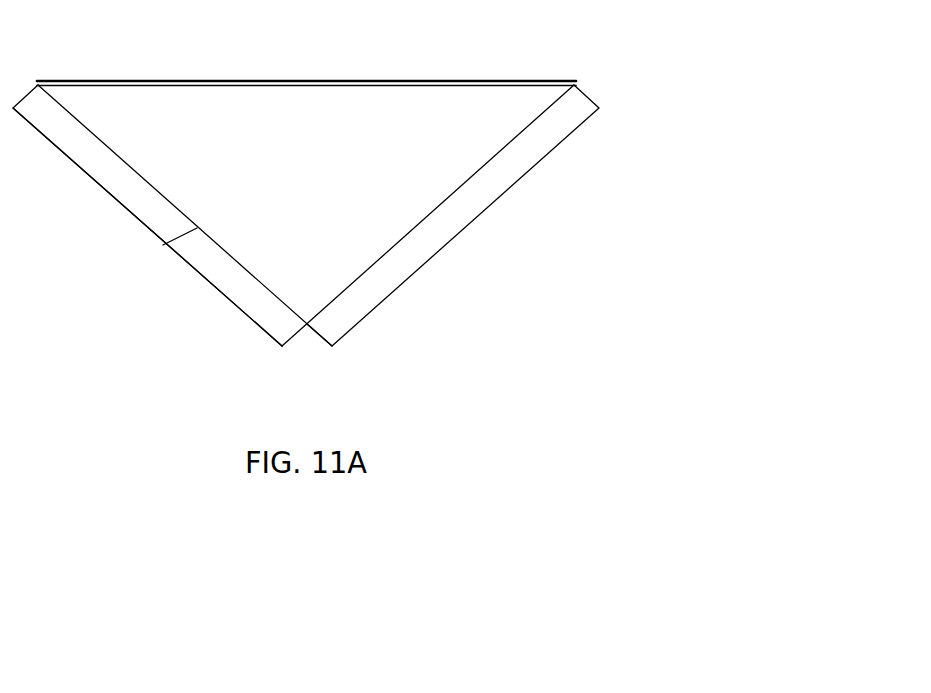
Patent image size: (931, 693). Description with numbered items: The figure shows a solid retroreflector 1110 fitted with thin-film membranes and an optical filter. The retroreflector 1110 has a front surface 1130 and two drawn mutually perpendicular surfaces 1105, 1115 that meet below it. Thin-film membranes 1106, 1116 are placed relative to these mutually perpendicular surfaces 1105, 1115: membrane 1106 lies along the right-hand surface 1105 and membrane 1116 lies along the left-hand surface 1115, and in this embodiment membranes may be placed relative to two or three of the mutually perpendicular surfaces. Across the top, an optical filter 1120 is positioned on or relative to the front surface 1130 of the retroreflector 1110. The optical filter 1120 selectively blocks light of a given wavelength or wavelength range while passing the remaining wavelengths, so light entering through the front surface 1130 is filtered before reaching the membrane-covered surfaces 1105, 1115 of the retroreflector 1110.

The solid retroreflector 1110 is at (417, 349).
The optical filter 1120 is at (520, 84).
The front surface 1130 is at (115, 83).
The thin-film membrane 1106 is at (535, 148).
The mutually perpendicular surface 1105 is at (465, 178).
The mutually perpendicular surface 1115 is at (163, 245).
The thin-film membrane 1116 is at (245, 287).